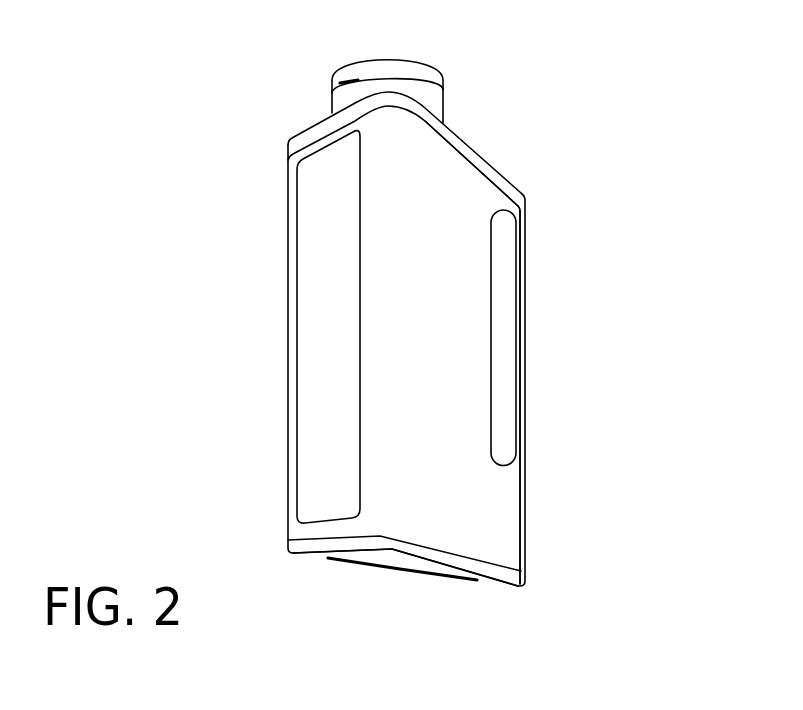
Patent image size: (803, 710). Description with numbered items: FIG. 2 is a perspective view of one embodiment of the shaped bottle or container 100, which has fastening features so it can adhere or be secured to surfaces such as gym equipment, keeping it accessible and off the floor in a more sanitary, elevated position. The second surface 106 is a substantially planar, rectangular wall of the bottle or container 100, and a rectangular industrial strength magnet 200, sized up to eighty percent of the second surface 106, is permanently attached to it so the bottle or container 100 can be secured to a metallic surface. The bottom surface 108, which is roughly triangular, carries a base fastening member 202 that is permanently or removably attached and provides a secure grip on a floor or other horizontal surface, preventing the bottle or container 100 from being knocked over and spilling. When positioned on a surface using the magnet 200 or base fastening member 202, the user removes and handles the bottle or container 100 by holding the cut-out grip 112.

The bottle or container 100 is at (272, 90).
The second surface 106 is at (492, 503).
The bottom surface 108 is at (317, 555).
The cut-out grip 112 is at (505, 350).
The rectangular industrial strength magnet 200 is at (315, 395).
The base fastening member 202 is at (418, 570).